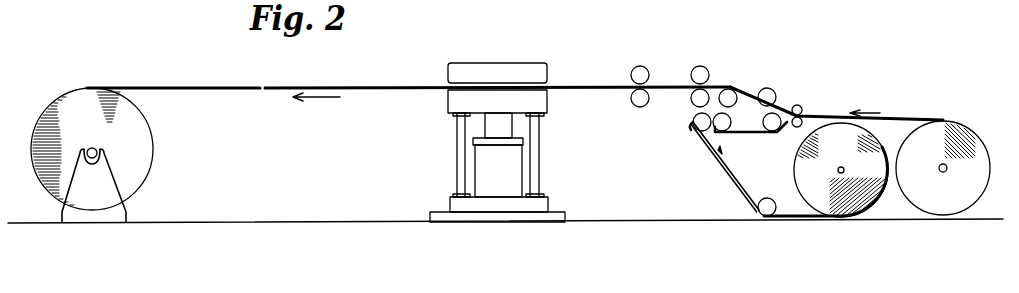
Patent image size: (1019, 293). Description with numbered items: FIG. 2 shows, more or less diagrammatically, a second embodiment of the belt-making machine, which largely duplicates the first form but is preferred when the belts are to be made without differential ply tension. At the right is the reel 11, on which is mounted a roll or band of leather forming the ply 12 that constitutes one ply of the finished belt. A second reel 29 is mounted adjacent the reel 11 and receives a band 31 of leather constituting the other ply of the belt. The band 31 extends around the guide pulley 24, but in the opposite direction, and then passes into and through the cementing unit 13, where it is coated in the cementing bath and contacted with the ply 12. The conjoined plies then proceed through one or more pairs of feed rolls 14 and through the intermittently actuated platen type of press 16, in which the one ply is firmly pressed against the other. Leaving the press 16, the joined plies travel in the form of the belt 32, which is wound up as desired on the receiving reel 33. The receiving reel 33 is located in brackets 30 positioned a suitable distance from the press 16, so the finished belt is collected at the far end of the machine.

The reel 11 is at (968, 156).
The ply 12 is at (912, 120).
The cementing unit 13 is at (733, 75).
The feed rolls 14 is at (655, 42).
The press 16 is at (512, 63).
The guide pulley 24 is at (759, 207).
The second reel 29 is at (841, 170).
The brackets 30 is at (102, 195).
The band 31 is at (718, 158).
The belt 32 is at (353, 88).
The receiving reel 33 is at (143, 132).